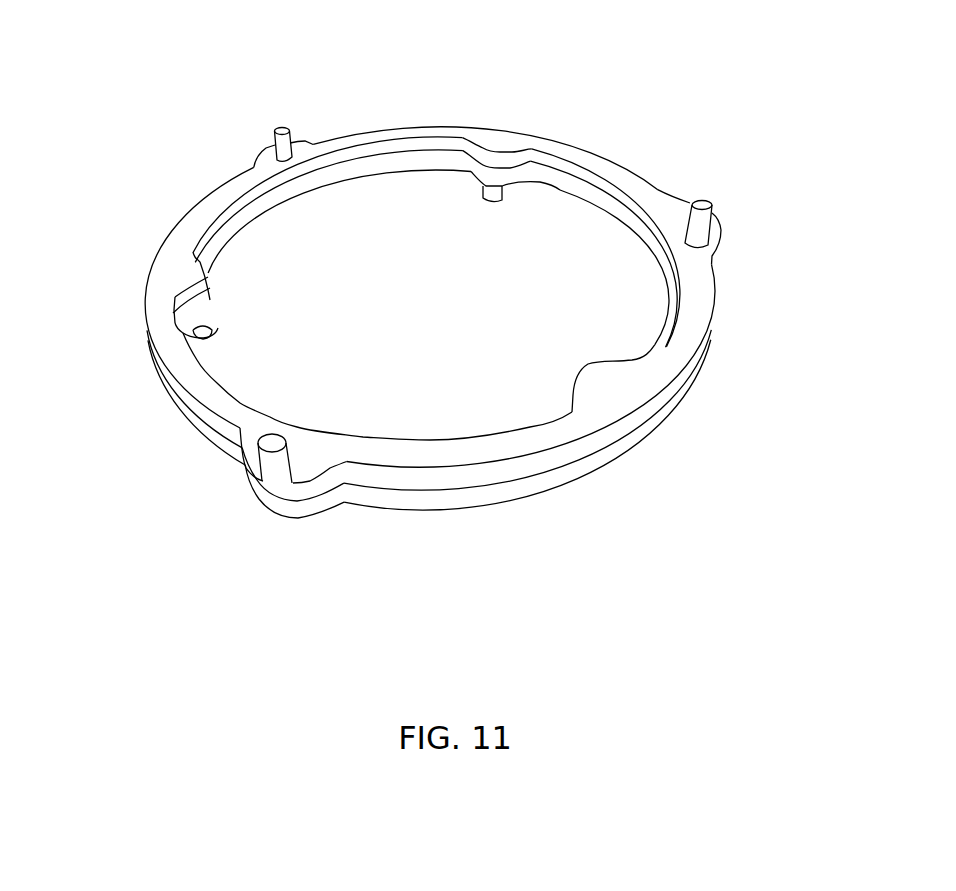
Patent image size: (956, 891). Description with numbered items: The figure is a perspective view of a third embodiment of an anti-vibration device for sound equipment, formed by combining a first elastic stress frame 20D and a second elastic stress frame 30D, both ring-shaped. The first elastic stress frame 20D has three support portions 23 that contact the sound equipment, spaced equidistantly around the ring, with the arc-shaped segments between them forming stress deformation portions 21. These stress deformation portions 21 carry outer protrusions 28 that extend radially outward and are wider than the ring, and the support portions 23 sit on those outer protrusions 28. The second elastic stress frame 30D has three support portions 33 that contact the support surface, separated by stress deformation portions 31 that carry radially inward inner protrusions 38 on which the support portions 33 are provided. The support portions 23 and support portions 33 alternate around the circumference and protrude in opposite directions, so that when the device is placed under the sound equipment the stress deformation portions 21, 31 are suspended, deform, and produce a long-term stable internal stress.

The first elastic stress frame 20D is at (656, 164).
The second elastic stress frame 30D is at (664, 433).
The stress deformation portion 21 is at (412, 132).
The stress deformation portion 31 is at (285, 197).
The support portion 23 is at (289, 152).
The outer protrusion 28 is at (267, 156).
The inner protrusion 38 is at (208, 308).
The support portion 33 is at (490, 196).